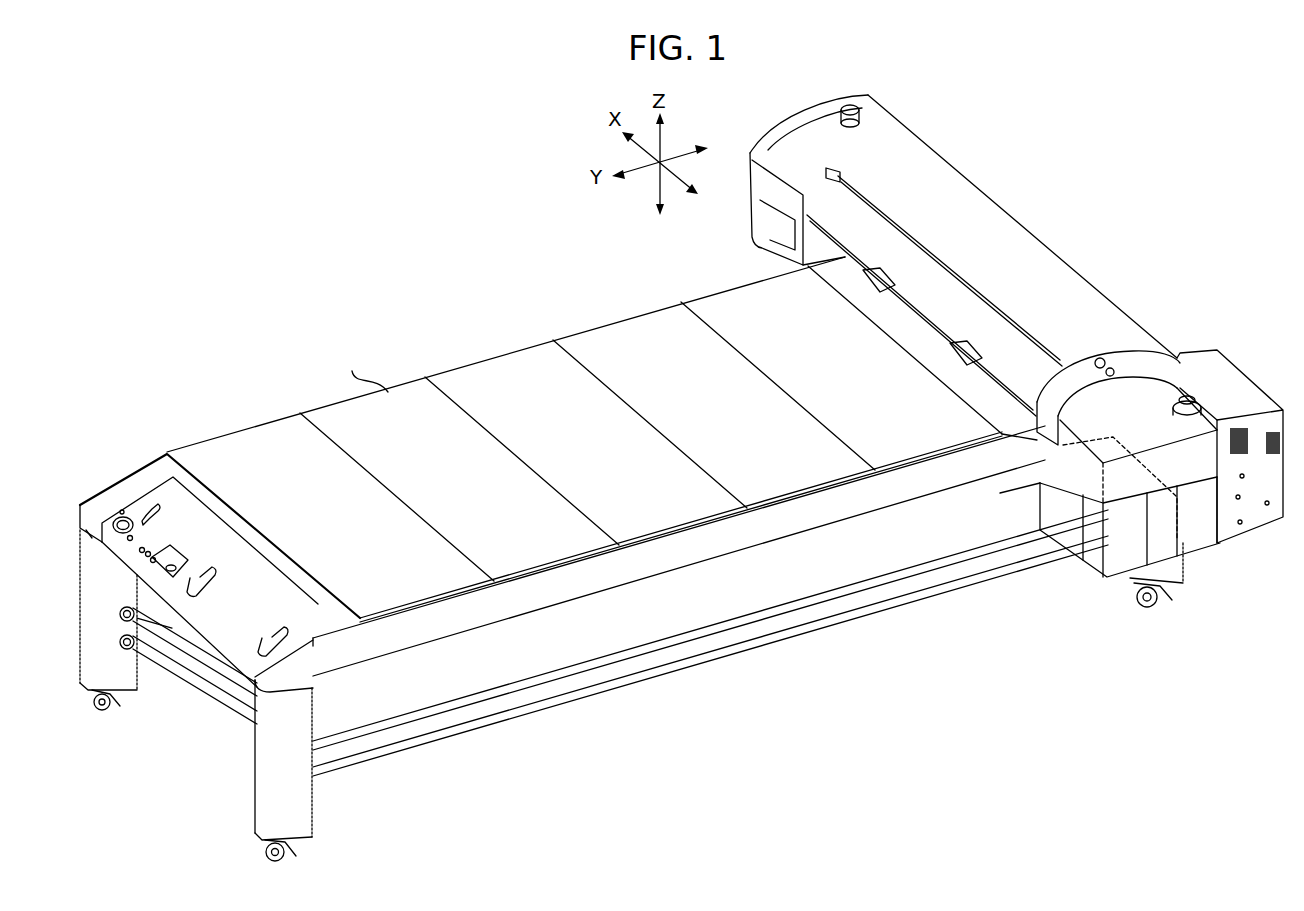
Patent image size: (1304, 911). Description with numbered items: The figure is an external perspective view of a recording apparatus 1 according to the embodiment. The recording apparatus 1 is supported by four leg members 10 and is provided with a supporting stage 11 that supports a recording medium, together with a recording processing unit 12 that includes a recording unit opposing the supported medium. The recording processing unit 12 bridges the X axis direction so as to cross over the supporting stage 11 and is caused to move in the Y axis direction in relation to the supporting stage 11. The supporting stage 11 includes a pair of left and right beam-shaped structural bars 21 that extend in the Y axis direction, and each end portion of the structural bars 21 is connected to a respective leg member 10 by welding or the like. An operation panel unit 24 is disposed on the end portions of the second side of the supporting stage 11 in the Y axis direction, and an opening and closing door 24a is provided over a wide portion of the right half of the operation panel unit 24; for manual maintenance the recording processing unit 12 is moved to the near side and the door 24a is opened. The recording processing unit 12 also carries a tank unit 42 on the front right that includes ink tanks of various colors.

The recording apparatus 1 is at (1016, 92).
The leg members 10 is at (88, 603).
The supporting stage 11 is at (143, 444).
The recording processing unit 12 is at (968, 168).
The structural bars 21 is at (457, 624).
The operation panel unit 24 is at (108, 481).
The opening and closing door 24a is at (232, 552).
The tank unit 42 is at (1180, 518).